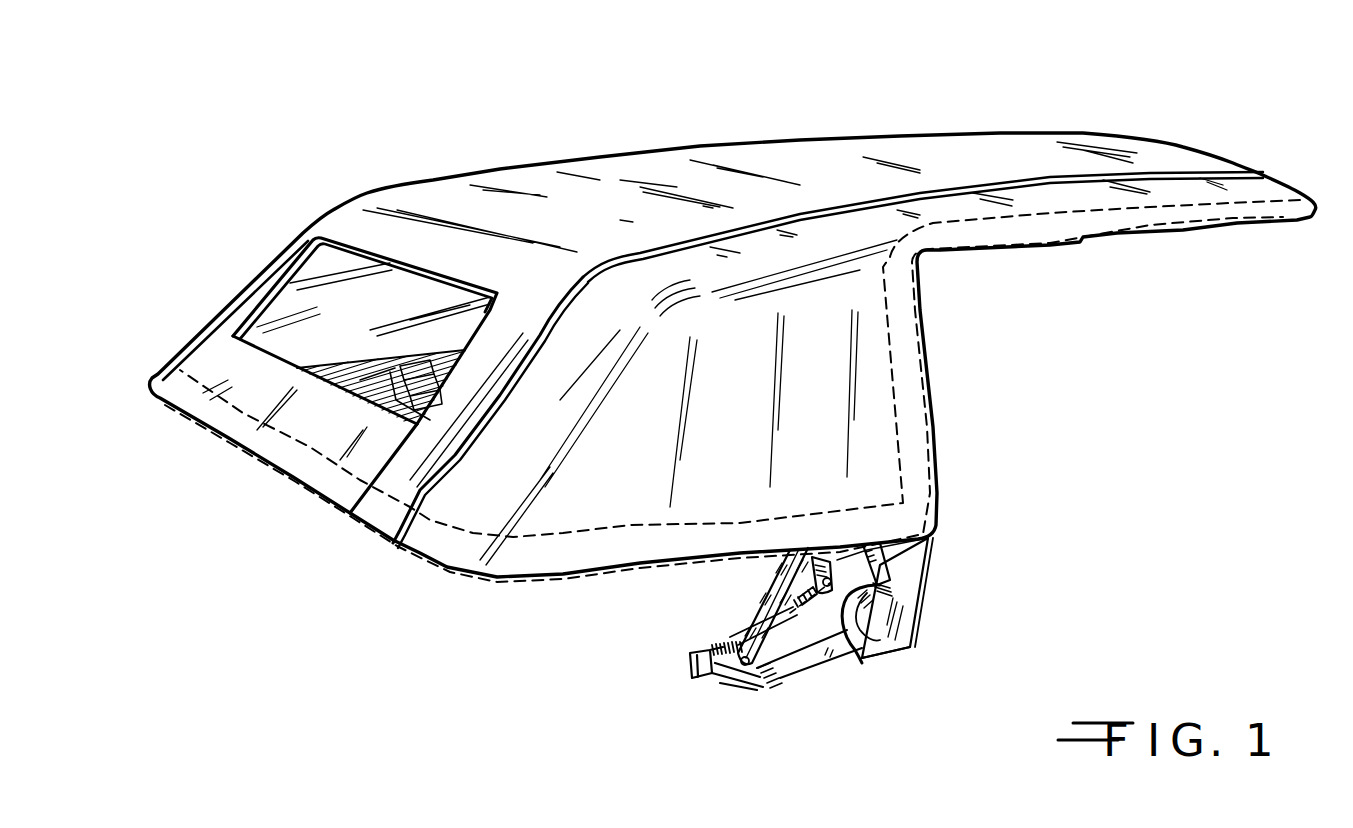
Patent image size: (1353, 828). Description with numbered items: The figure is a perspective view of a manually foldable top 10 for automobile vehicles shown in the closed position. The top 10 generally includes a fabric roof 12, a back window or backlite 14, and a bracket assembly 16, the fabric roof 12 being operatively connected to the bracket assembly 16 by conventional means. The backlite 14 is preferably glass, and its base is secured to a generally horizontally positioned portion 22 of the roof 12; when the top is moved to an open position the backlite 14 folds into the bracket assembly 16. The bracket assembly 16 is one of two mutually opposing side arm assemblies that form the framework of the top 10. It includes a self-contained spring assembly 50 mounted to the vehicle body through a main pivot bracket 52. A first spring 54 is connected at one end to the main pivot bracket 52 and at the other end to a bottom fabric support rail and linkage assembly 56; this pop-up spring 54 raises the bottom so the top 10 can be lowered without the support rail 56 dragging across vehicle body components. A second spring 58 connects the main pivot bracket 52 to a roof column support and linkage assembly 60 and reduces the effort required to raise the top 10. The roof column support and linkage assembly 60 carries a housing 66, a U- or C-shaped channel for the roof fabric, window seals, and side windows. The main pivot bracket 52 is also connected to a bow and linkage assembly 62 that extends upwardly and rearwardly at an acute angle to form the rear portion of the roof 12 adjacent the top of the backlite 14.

The manually foldable top 10 is at (683, 128).
The fabric roof 12 is at (779, 140).
The backlite 14 is at (365, 331).
The bracket assembly 16 is at (955, 522).
The horizontally positioned portion 22 is at (273, 357).
The self-contained spring assembly 50 is at (918, 613).
The main pivot bracket 52 is at (908, 650).
The first spring 54 is at (775, 677).
The bottom fabric support rail and linkage assembly 56 is at (865, 640).
The second spring 58 is at (731, 647).
The roof column support and linkage assembly 60 is at (925, 560).
The bow and linkage assembly 62 is at (768, 580).
The housing 66 is at (905, 553).